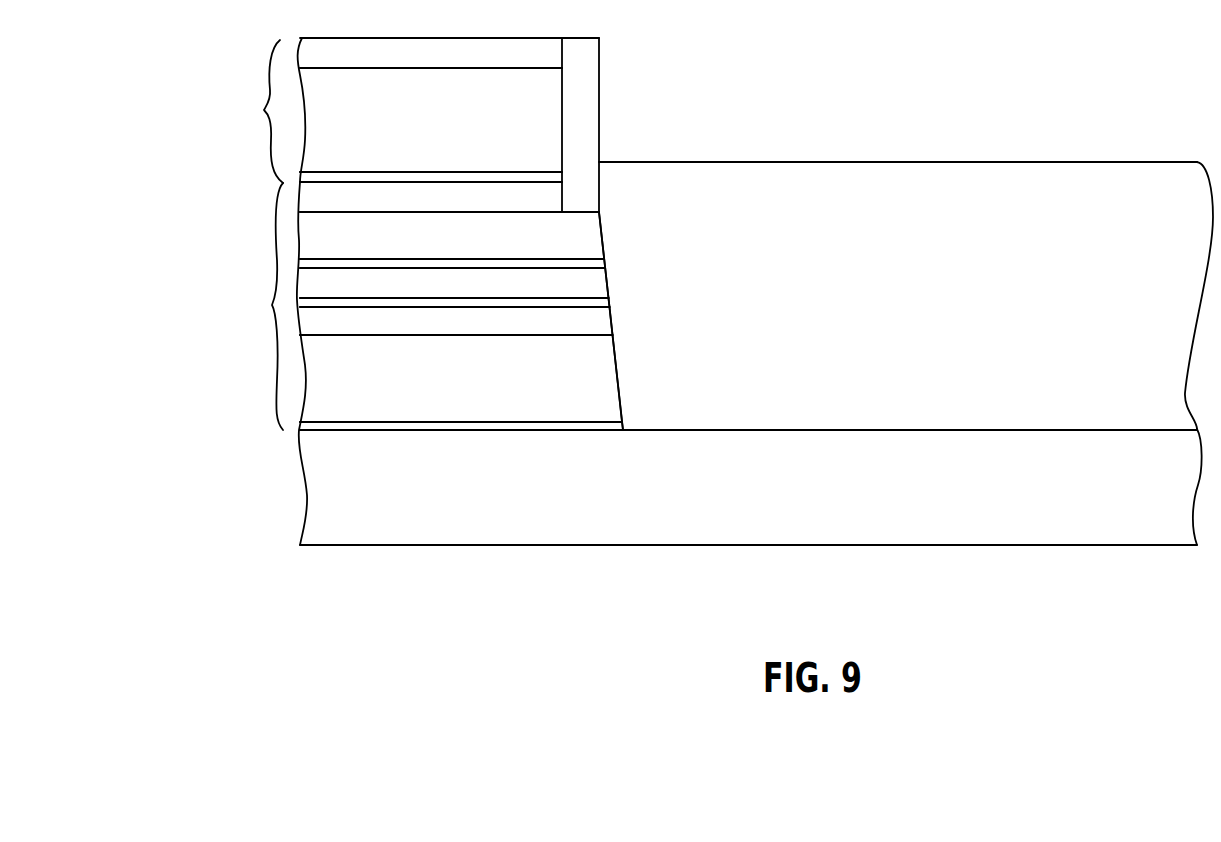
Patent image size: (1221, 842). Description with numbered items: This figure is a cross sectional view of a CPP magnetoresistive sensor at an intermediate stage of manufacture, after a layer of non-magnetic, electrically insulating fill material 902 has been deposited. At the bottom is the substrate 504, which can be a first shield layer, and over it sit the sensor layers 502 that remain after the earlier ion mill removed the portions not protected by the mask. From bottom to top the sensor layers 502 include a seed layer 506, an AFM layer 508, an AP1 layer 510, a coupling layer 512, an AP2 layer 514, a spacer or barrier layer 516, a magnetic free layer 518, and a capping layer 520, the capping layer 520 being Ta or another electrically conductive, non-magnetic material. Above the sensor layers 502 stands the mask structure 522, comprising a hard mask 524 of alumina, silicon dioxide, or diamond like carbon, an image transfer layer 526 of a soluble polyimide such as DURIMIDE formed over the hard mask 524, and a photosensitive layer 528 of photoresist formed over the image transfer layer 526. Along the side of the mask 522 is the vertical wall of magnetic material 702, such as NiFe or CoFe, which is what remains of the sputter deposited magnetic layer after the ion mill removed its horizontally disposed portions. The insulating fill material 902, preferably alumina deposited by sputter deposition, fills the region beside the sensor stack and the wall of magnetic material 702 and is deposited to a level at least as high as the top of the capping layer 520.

The sensor layers 502 is at (276, 205).
The substrate 504 is at (778, 486).
The seed layer 506 is at (528, 424).
The AFM layer 508 is at (487, 374).
The AP1 layer 510 is at (487, 321).
The coupling layer 512 is at (514, 300).
The AP2 layer 514 is at (487, 282).
The spacer or barrier layer 516 is at (514, 262).
The magnetic free layer 518 is at (487, 237).
The capping layer 520 is at (487, 195).
The mask structure 522 is at (262, 58).
The hard mask 524 is at (431, 177).
The image transfer layer 526 is at (487, 116).
The photosensitive layer 528 is at (487, 52).
The layer of magnetic material 702 is at (582, 127).
The insulating fill material 902 is at (927, 313).